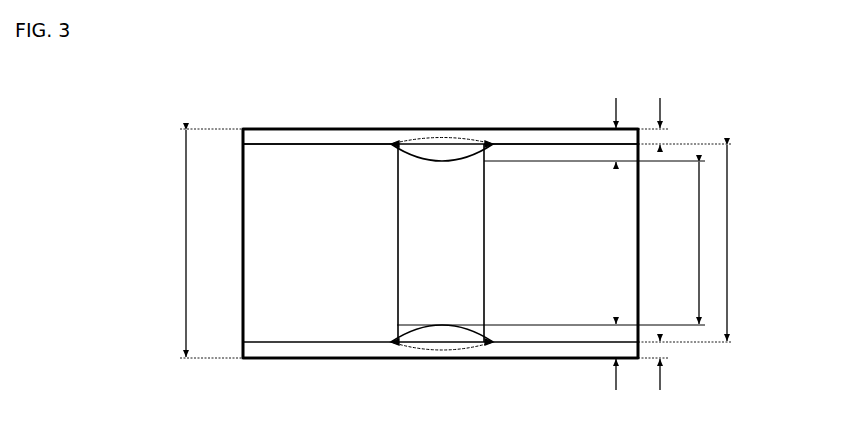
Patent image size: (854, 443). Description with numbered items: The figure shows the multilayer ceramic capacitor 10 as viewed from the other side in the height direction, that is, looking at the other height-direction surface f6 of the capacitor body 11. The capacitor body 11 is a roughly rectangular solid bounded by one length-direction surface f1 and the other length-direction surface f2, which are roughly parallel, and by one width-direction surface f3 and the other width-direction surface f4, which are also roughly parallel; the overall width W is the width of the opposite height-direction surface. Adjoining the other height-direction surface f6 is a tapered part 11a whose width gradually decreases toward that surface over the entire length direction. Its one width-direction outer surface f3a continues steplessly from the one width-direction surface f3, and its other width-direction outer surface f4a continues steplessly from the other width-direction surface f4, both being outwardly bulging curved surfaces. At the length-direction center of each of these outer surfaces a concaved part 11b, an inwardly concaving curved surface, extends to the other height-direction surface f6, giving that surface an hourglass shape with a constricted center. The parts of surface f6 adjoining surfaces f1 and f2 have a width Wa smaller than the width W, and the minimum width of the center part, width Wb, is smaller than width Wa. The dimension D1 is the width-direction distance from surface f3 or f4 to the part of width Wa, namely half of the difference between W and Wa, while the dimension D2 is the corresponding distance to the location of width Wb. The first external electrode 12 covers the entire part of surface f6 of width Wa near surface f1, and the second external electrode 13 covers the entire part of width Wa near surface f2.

The multilayer ceramic capacitor 10 is at (252, 128).
The capacitor body 11 is at (358, 128).
The tapered part 11a is at (393, 133).
The concaved part 11b is at (434, 148).
The first external electrode 12 is at (270, 228).
The second external electrode 13 is at (610, 228).
The one length-direction surface f1 is at (244, 254).
The other length-direction surface f2 is at (640, 256).
The one width-direction surface f3 is at (485, 128).
The one width-direction outer surface f3a is at (524, 135).
The other width-direction surface f4 is at (490, 360).
The other width-direction outer surface f4a is at (522, 352).
The other height-direction surface f6 is at (440, 300).
The width W is at (206, 243).
The width Wa is at (694, 243).
The width Wb is at (560, 243).
The width-direction dimension D1 is at (659, 244).
The width-direction dimension D2 is at (626, 244).